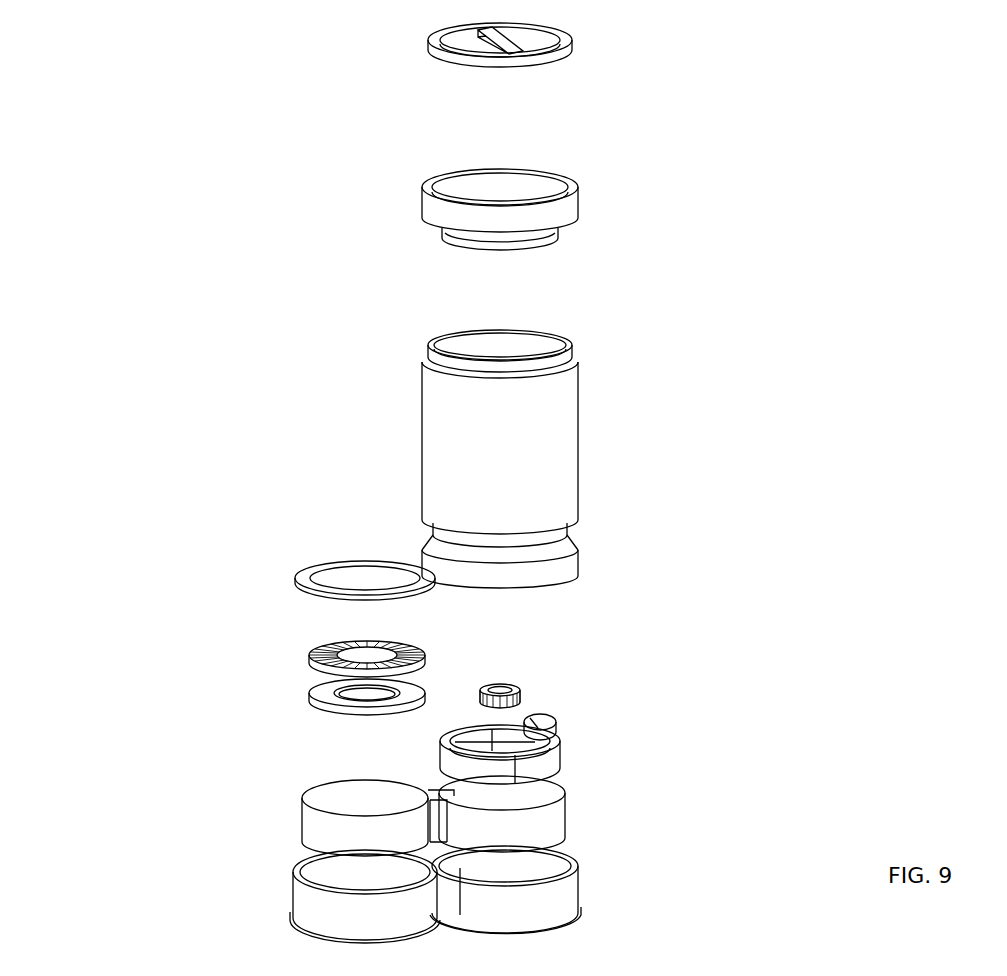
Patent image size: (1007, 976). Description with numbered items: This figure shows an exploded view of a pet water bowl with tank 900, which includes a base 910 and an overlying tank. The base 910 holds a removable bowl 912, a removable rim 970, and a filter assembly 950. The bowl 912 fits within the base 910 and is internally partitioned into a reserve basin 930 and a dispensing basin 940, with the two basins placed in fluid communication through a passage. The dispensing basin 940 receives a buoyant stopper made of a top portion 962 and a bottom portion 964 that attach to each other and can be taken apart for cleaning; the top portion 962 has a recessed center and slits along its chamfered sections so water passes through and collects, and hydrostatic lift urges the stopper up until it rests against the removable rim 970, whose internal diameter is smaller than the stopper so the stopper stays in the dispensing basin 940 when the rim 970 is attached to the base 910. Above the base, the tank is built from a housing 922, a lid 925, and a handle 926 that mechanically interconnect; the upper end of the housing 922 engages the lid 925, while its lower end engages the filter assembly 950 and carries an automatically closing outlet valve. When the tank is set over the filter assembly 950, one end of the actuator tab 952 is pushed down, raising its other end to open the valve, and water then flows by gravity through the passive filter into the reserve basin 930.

The pet water bowl with tank 900 is at (940, 110).
The handle 926 is at (587, 47).
The lid 925 is at (595, 202).
The housing 922 is at (593, 455).
The removable rim 970 is at (281, 580).
The top portion 962 is at (295, 660).
The bottom portion 964 is at (295, 693).
The actuator tab 952 is at (575, 724).
The filter assembly 950 is at (580, 750).
The reserve basin 930 is at (552, 795).
The dispensing basin 940 is at (325, 800).
The removable bowl 912 is at (287, 836).
The base 910 is at (277, 895).